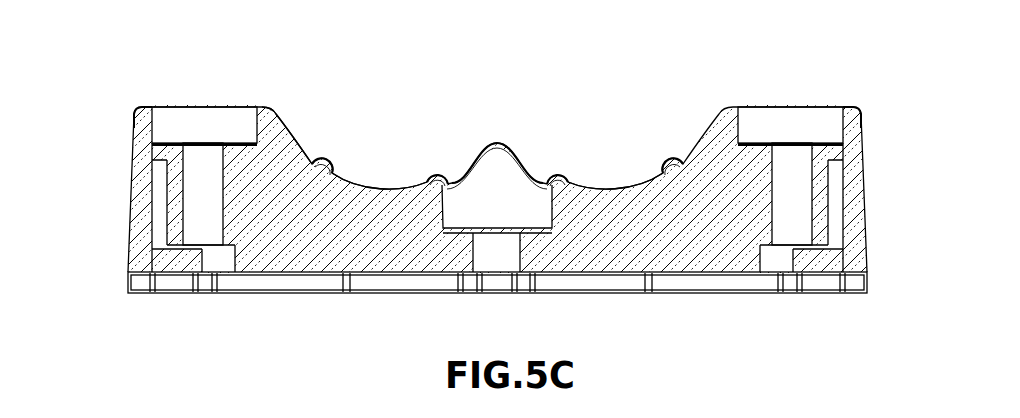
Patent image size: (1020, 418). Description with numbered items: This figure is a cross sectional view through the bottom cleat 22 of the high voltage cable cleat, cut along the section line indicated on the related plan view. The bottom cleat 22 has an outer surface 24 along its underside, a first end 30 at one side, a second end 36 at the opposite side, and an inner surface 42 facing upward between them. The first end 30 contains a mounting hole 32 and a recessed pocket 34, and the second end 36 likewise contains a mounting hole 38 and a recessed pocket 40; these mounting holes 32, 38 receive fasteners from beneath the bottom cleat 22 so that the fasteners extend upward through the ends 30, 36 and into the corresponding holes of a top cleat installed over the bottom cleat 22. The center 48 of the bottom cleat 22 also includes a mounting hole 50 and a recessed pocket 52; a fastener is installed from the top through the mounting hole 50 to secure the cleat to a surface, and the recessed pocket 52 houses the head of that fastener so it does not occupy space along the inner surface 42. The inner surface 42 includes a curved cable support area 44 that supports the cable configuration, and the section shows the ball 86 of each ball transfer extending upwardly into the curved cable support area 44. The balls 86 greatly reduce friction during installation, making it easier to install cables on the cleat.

The bottom cleat 22 is at (128, 197).
The outer surface 24 is at (173, 295).
The first end 30 is at (135, 119).
The mounting hole 32 is at (203, 165).
The recessed pocket 34 is at (168, 123).
The second end 36 is at (852, 108).
The mounting hole 38 is at (790, 190).
The recessed pocket 40 is at (818, 125).
The inner surface 42 is at (277, 108).
The curved cable support area 44 is at (393, 186).
The center 48 is at (533, 165).
The mounting hole 50 is at (497, 253).
The recessed pocket 52 is at (462, 192).
The ball 86 is at (328, 158).